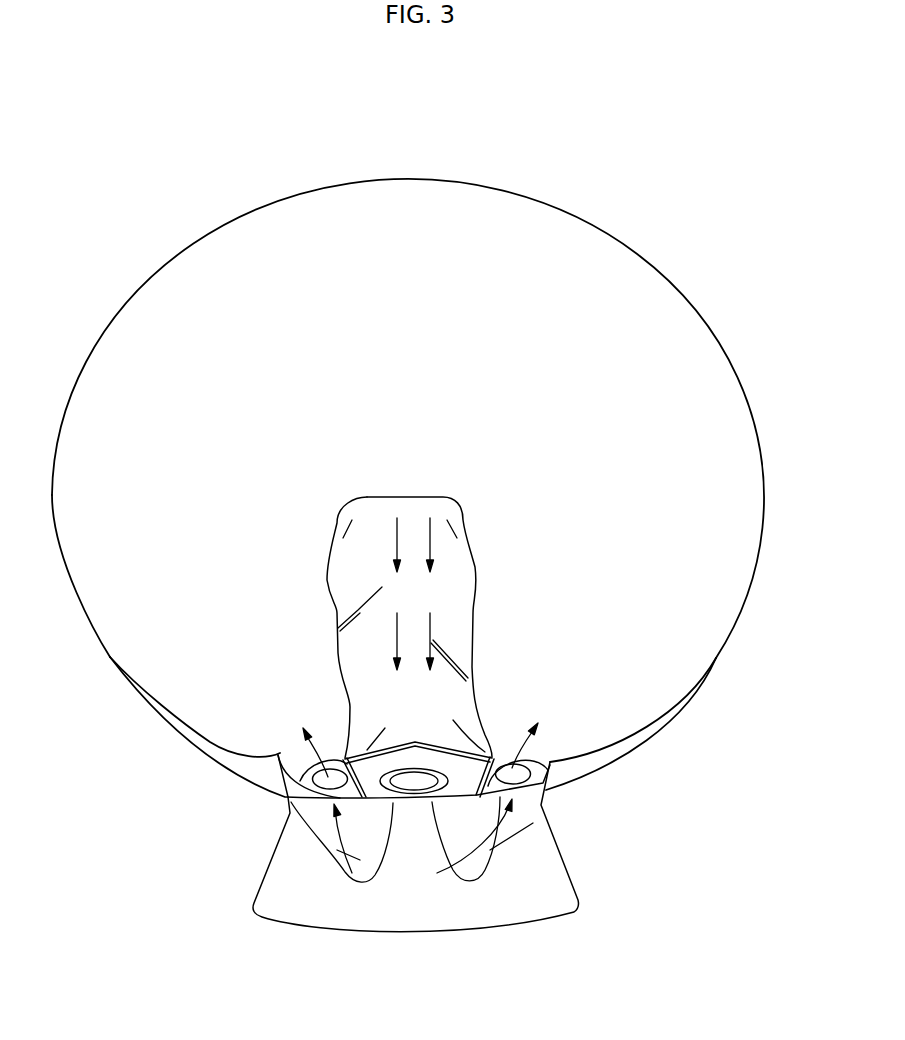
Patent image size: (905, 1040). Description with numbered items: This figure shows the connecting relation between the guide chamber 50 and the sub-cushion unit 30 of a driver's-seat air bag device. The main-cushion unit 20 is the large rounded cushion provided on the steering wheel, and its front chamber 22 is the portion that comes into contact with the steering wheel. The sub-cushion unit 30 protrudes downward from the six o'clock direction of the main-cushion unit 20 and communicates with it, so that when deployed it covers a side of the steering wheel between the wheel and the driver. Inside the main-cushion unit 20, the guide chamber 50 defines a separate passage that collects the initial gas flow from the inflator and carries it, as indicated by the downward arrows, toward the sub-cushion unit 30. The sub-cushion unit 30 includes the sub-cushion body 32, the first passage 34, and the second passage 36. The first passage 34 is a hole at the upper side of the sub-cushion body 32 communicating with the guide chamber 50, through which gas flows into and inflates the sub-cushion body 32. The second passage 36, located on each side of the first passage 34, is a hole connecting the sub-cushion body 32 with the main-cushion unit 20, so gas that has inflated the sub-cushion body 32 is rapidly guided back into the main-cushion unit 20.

The main-cushion unit 20 is at (648, 170).
The front chamber 22 is at (697, 301).
The sub-cushion unit 30 is at (598, 852).
The sub-cushion body 32 is at (502, 908).
The first passage 34 is at (377, 802).
The second passage 36 is at (302, 788).
The guide chamber 50 is at (455, 608).